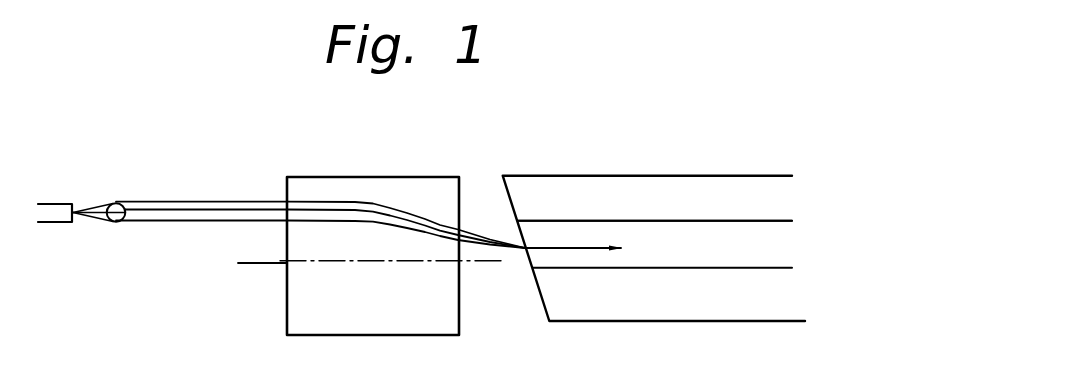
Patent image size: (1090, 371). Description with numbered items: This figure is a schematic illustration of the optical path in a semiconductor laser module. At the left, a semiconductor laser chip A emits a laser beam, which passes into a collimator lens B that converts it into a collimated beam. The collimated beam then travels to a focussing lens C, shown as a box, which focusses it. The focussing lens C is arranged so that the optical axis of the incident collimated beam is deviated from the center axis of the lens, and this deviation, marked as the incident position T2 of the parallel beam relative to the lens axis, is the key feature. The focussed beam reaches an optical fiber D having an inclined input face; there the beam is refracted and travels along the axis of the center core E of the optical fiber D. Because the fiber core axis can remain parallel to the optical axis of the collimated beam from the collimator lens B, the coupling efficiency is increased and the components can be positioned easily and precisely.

The semiconductor laser chip A is at (54, 123).
The collimator lens B is at (130, 123).
The focussing lens C is at (386, 123).
The optical fiber D is at (679, 123).
The center core E is at (728, 228).
The incident position of the parallel beam T2 is at (245, 185).